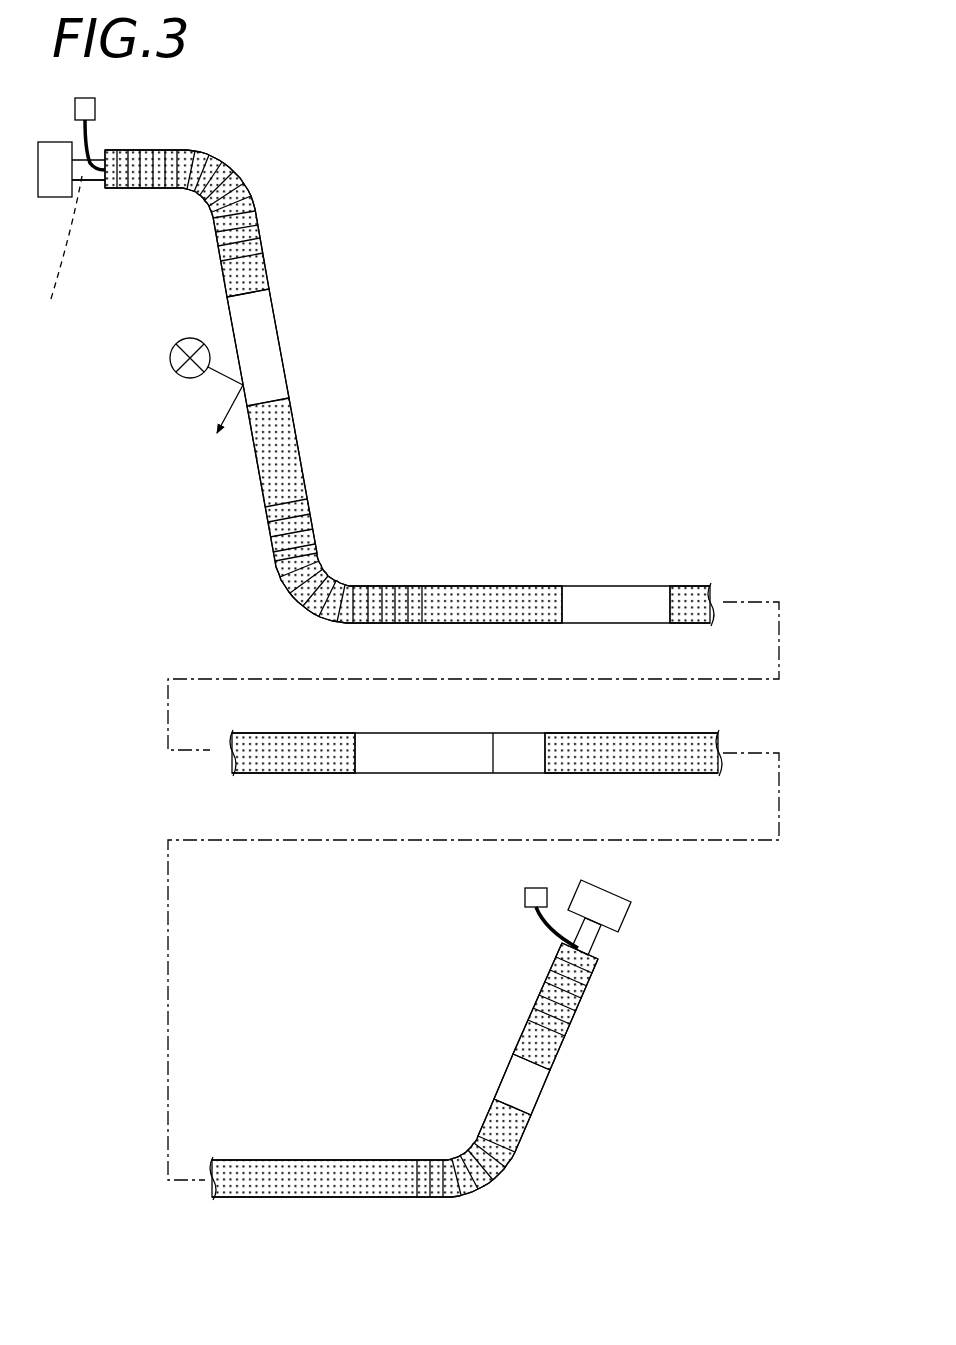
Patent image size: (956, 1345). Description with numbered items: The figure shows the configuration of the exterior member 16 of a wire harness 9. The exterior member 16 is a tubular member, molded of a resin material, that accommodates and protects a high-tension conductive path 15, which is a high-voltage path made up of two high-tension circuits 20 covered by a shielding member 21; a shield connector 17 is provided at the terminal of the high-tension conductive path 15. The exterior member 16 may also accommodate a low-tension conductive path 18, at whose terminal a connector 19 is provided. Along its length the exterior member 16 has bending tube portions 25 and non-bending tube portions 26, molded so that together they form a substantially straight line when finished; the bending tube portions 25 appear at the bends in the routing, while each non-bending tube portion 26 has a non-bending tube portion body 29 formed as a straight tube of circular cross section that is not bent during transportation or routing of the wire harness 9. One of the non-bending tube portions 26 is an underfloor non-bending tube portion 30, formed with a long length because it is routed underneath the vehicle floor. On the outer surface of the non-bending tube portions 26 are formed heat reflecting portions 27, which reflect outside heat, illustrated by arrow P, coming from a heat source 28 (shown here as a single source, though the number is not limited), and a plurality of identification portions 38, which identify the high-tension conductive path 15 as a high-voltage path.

The wire harness 9 is at (460, 431).
The high-tension conductive path 15 is at (600, 943).
The exterior member 16 is at (302, 466).
The shield connector 17 is at (55, 198).
The low-tension conductive path 18 is at (543, 928).
The connector 19 is at (97, 107).
The high-tension circuit 20 is at (61, 254).
The shielding member 21 is at (103, 190).
The bending tube portion 25 is at (229, 162).
The non-bending tube portion 26 is at (262, 253).
The heat reflecting portion 27 is at (235, 312).
The heat source 28 is at (170, 358).
The non-bending tube portion body 29 is at (224, 268).
The underfloor non-bending tube portion 30 is at (688, 590).
The identification portion 38 is at (605, 592).
The arrow P is at (223, 417).